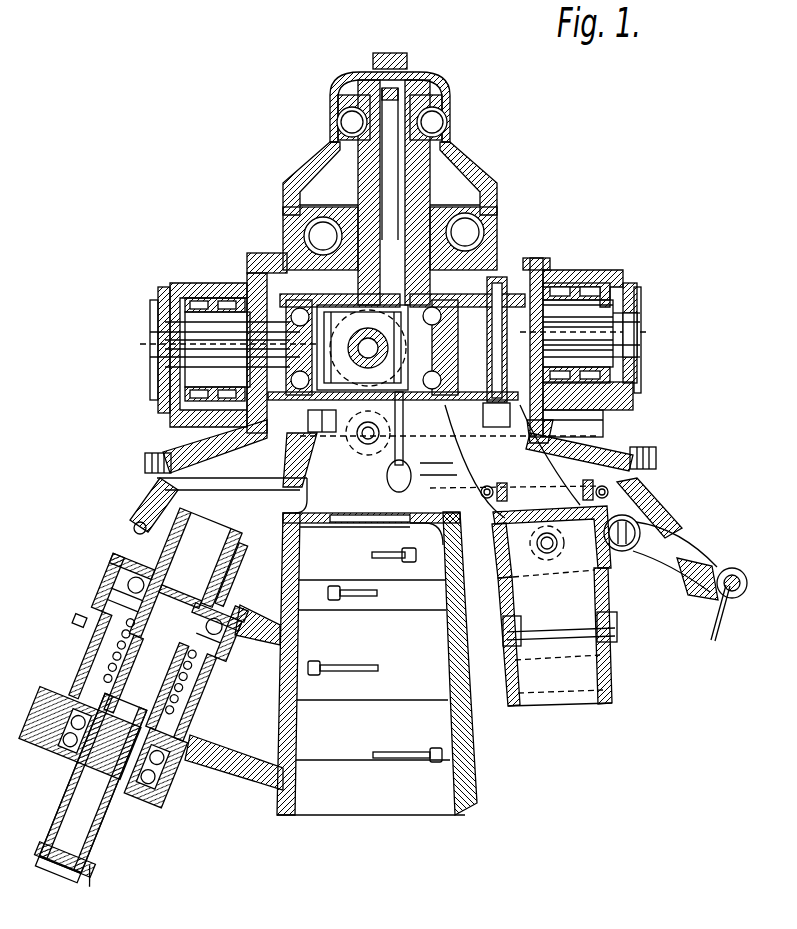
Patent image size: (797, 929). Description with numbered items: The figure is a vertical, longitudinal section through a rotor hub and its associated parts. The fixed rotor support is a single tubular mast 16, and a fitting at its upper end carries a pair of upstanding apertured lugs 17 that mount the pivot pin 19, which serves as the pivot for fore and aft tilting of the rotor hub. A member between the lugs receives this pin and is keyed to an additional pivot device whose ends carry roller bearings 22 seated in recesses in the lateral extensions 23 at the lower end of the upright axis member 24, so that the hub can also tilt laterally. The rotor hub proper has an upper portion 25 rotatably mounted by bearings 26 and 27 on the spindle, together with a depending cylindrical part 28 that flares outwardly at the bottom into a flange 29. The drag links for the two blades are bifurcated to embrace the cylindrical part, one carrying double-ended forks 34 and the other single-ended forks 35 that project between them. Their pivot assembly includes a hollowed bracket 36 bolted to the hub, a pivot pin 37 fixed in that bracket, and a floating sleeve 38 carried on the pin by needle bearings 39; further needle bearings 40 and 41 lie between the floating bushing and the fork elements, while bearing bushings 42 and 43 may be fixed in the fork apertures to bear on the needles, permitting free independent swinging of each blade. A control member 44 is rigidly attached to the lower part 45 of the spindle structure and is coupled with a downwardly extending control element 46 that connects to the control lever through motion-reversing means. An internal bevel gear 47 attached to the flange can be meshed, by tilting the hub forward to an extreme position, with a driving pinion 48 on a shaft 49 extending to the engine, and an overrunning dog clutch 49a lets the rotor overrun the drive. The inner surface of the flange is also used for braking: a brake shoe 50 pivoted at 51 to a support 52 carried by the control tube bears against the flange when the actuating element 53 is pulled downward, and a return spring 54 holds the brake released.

The tubular mast 16 is at (452, 807).
The lugs 17 is at (307, 488).
The pivot pin 19 is at (364, 360).
The roller bearings 22 is at (297, 300).
The lateral extensions 23 is at (287, 245).
The upright axis member 24 is at (453, 207).
The upper portion of rotor hub 25 is at (468, 228).
The bearing 26 is at (450, 115).
The bearing 27 is at (497, 214).
The depending cylindrical part 28 is at (518, 257).
The flange 29 is at (207, 450).
The double-ended forks 34 is at (548, 283).
The single-ended forks 35 is at (567, 283).
The hollowed bracket 36 is at (172, 283).
The pivot pin 37 is at (183, 338).
The floating sleeve 38 is at (187, 320).
The needle bearings 39 is at (632, 358).
The needle bearings 40 is at (635, 372).
The needle bearings 41 is at (560, 388).
The bearing bushing 42 is at (548, 283).
The bearing bushing 43 is at (615, 277).
The control member 44 is at (521, 455).
The lower part of spindle structure 45 is at (437, 400).
The control element 46 is at (593, 673).
The internal bevel gear 47 is at (140, 538).
The driving pinion 48 is at (240, 567).
The shaft 49 is at (82, 827).
The overrunning dog clutch 49a is at (100, 660).
The brake shoe 50 is at (650, 470).
The pivot 51 is at (636, 533).
The support 52 is at (612, 552).
The actuating element 53 is at (712, 618).
The return spring 54 is at (505, 487).